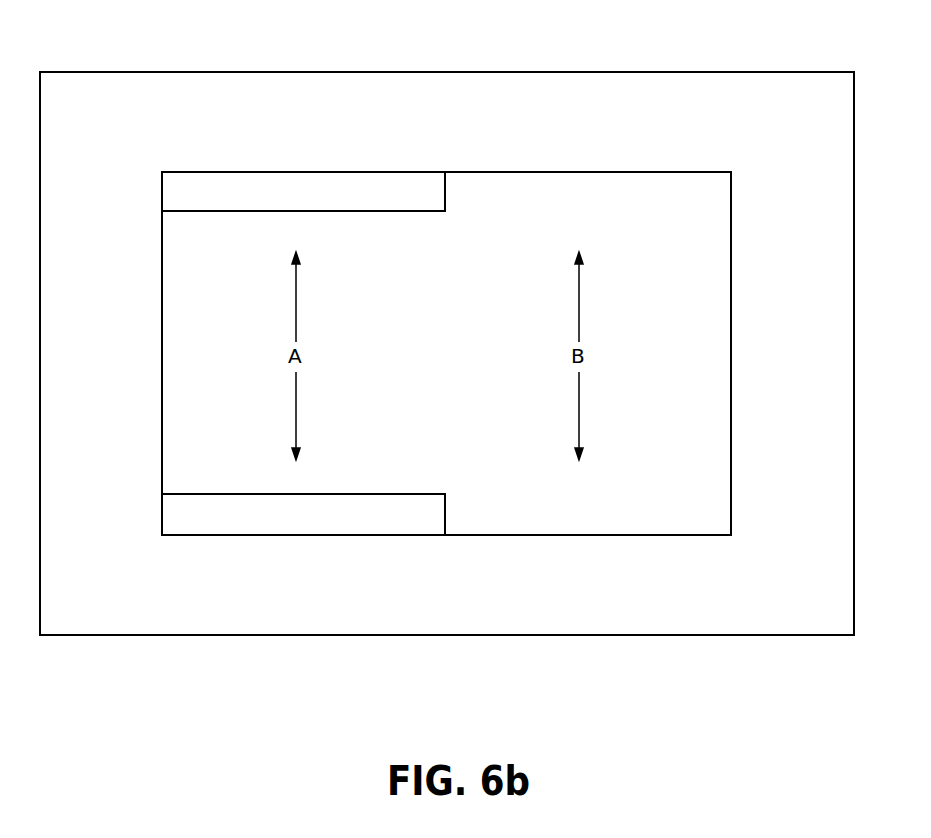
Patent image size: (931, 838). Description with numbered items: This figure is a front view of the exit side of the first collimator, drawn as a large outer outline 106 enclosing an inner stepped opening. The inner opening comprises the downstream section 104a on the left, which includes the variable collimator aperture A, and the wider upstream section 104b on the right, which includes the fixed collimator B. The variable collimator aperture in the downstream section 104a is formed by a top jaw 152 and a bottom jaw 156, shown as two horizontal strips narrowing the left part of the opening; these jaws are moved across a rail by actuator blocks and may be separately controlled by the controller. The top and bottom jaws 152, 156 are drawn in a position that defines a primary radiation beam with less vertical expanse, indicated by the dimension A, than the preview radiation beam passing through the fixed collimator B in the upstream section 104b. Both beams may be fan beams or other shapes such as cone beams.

The substrate 106 is at (130, 71).
The downstream section 104a is at (221, 535).
The upstream section 104b is at (595, 172).
The top jaw 152 is at (323, 188).
The bottom jaw 156 is at (329, 523).